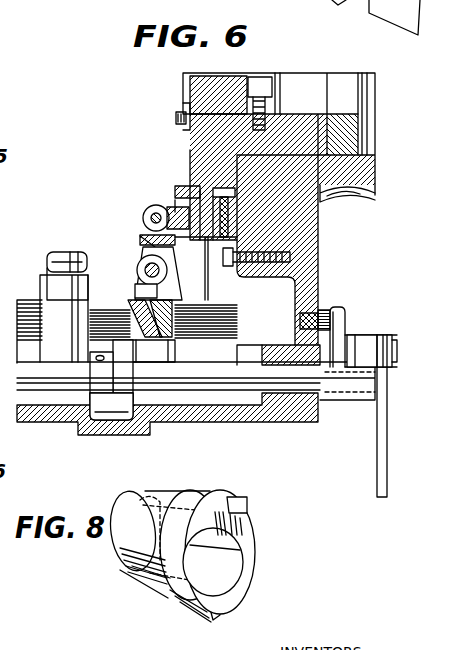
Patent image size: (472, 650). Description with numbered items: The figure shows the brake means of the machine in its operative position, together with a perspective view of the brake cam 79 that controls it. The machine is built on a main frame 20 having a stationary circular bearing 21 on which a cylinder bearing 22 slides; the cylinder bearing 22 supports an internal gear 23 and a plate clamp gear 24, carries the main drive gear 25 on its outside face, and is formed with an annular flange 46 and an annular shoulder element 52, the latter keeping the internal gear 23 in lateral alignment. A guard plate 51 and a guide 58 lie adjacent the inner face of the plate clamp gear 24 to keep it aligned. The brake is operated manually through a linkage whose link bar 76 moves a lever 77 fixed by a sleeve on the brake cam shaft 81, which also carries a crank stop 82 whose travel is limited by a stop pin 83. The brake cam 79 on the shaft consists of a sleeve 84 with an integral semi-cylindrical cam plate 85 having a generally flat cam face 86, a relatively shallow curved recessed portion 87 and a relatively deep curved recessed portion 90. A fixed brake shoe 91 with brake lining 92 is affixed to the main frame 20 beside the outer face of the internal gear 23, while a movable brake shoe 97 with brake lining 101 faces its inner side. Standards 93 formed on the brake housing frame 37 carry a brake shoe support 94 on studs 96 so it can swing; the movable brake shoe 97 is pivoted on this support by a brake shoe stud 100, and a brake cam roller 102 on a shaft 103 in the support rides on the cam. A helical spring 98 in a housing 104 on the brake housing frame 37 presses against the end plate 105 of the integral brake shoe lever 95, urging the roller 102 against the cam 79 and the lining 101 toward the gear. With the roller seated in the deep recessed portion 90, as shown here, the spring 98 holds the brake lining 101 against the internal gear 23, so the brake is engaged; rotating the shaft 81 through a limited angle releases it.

In FIG. 6, the main frame 20 is at (305, 250).
In FIG. 6, the stationary circular bearing 21 is at (345, 195).
In FIG. 6, the cylinder bearing 22 is at (190, 150).
In FIG. 6, the internal gear 23 is at (208, 260).
In FIG. 6, the plate clamp gear 24 is at (214, 95).
In FIG. 6, the main drive gear 25 is at (348, 170).
In FIG. 6, the brake housing frame 37 is at (48, 422).
In FIG. 6, the annular flange 46 is at (218, 180).
In FIG. 6, the guard plate 51 is at (183, 100).
In FIG. 6, the annular shoulder element 52 is at (195, 192).
In FIG. 6, the guide 58 is at (265, 80).
In FIG. 6, the link bar 76 is at (386, 490).
In FIG. 6, the lever 77 is at (372, 334).
In FIG. 6, the brake cam 79 is at (108, 425).
In FIG. 8, the brake cam 79 is at (245, 482).
In FIG. 6, the brake cam shaft 81 is at (225, 400).
In FIG. 6, the crank stop 82 is at (352, 335).
In FIG. 6, the stop pin 83 is at (339, 310).
In FIG. 8, the sleeve 84 is at (120, 574).
In FIG. 8, the semi-cylindrical cam plate 85 is at (172, 602).
In FIG. 8, the cam face 86 is at (208, 612).
In FIG. 8, the shallow curved recessed portion 87 is at (250, 508).
In FIG. 8, the deep curved recessed portion 90 is at (225, 556).
In FIG. 6, the fixed brake shoe 91 is at (232, 270).
In FIG. 6, the brake lining 92 is at (228, 272).
In FIG. 6, the standard 93 is at (136, 274).
In FIG. 6, the brake shoe support 94 is at (170, 244).
In FIG. 6, the brake shoe lever 95 is at (60, 265).
In FIG. 6, the stud 96 is at (140, 238).
In FIG. 6, the movable brake shoe 97 is at (150, 202).
In FIG. 6, the helical spring 98 is at (50, 266).
In FIG. 6, the brake shoe stud 100 is at (150, 216).
In FIG. 6, the brake lining 101 is at (175, 200).
In FIG. 6, the brake cam roller 102 is at (131, 368).
In FIG. 6, the shaft 103 is at (172, 349).
In FIG. 6, the housing 104 is at (48, 288).
In FIG. 6, the end plate 105 is at (60, 254).